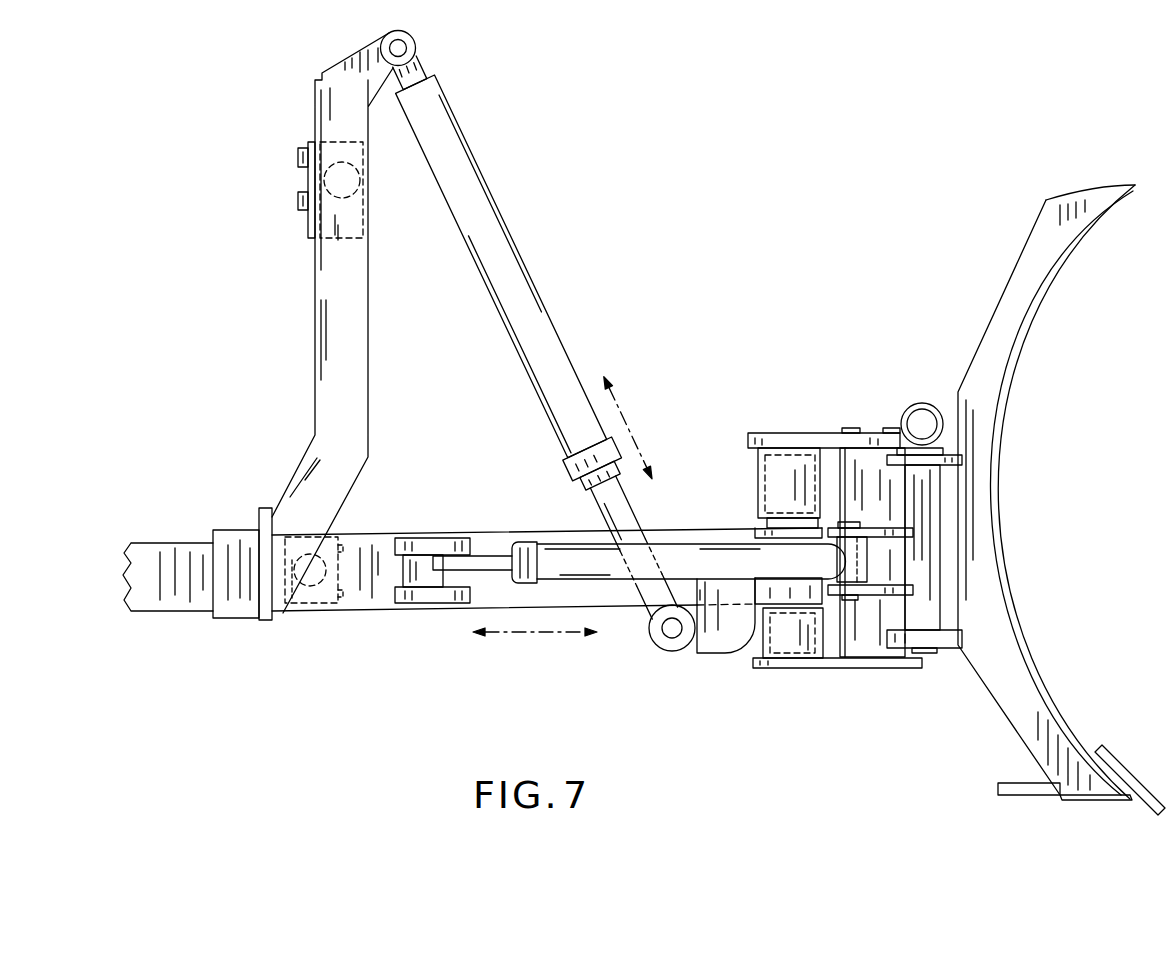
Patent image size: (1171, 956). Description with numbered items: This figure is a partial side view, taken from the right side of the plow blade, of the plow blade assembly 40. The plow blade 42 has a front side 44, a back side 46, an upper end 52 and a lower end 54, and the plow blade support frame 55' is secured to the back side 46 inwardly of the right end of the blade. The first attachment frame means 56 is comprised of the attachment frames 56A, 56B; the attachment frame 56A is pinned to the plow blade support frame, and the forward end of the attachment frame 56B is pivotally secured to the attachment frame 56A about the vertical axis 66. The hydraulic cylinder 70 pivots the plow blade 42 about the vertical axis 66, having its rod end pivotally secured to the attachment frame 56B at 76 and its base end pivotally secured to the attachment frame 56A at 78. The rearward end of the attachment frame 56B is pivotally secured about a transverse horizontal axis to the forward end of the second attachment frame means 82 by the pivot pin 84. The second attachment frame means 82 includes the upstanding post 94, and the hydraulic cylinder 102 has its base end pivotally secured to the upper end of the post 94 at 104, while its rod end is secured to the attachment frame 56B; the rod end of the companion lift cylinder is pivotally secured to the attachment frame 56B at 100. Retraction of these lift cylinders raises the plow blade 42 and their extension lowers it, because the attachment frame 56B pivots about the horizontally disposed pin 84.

The plow blade assembly 40 is at (720, 303).
The plow blade 42 is at (1083, 188).
The front side 44 is at (1011, 583).
The back side 46 is at (958, 427).
The upper end 52 is at (1046, 200).
The lower end 54 is at (1077, 803).
The plow blade support frame 55' is at (993, 547).
The first attachment frame means 56 is at (827, 393).
The attachment frame 56A is at (817, 432).
The attachment frame 56B is at (527, 518).
The vertical axis 66 is at (765, 528).
The hydraulic cylinder 70 is at (607, 570).
The rod end pivot of hydraulic cylinder 70 76 is at (423, 600).
The base end pivot of hydraulic cylinder 70 78 is at (895, 533).
The second attachment frame means 82 is at (186, 514).
The pivot pin 84 is at (325, 605).
The upstanding post 94 is at (316, 322).
The rod end pivot of hydraulic cylinder 96 100 is at (672, 628).
The hydraulic cylinder 102 is at (505, 270).
The base end pivot of hydraulic cylinder 102 104 is at (417, 48).